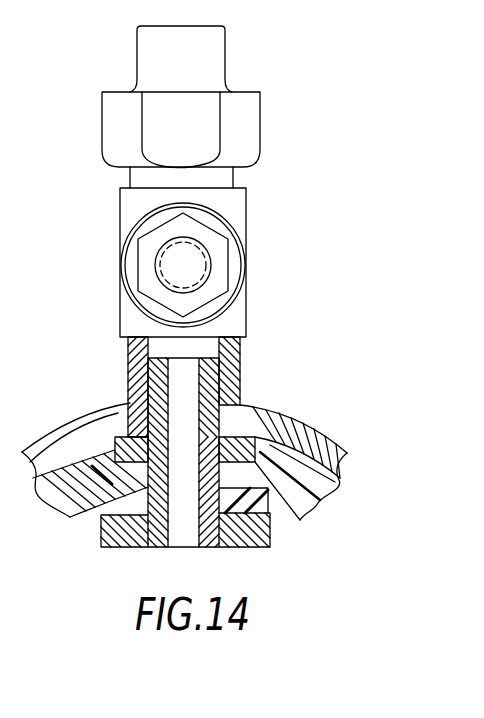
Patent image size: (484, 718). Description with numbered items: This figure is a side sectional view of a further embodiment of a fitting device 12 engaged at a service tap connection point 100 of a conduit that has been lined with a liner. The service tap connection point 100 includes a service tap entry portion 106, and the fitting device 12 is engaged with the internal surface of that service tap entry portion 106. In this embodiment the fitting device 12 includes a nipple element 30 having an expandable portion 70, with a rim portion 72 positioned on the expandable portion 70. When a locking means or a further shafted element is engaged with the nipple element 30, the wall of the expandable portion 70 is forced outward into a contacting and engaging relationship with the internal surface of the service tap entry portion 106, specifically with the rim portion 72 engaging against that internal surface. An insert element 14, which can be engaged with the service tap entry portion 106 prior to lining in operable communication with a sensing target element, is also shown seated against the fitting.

The service tap connection point 100 is at (275, 132).
The service tap entry portion 106 is at (137, 365).
The rim portion 72 is at (243, 353).
The expandable portion 70 is at (240, 383).
The insert element 14 is at (127, 440).
The nipple element 30 is at (288, 533).
The fitting device 12 is at (277, 553).